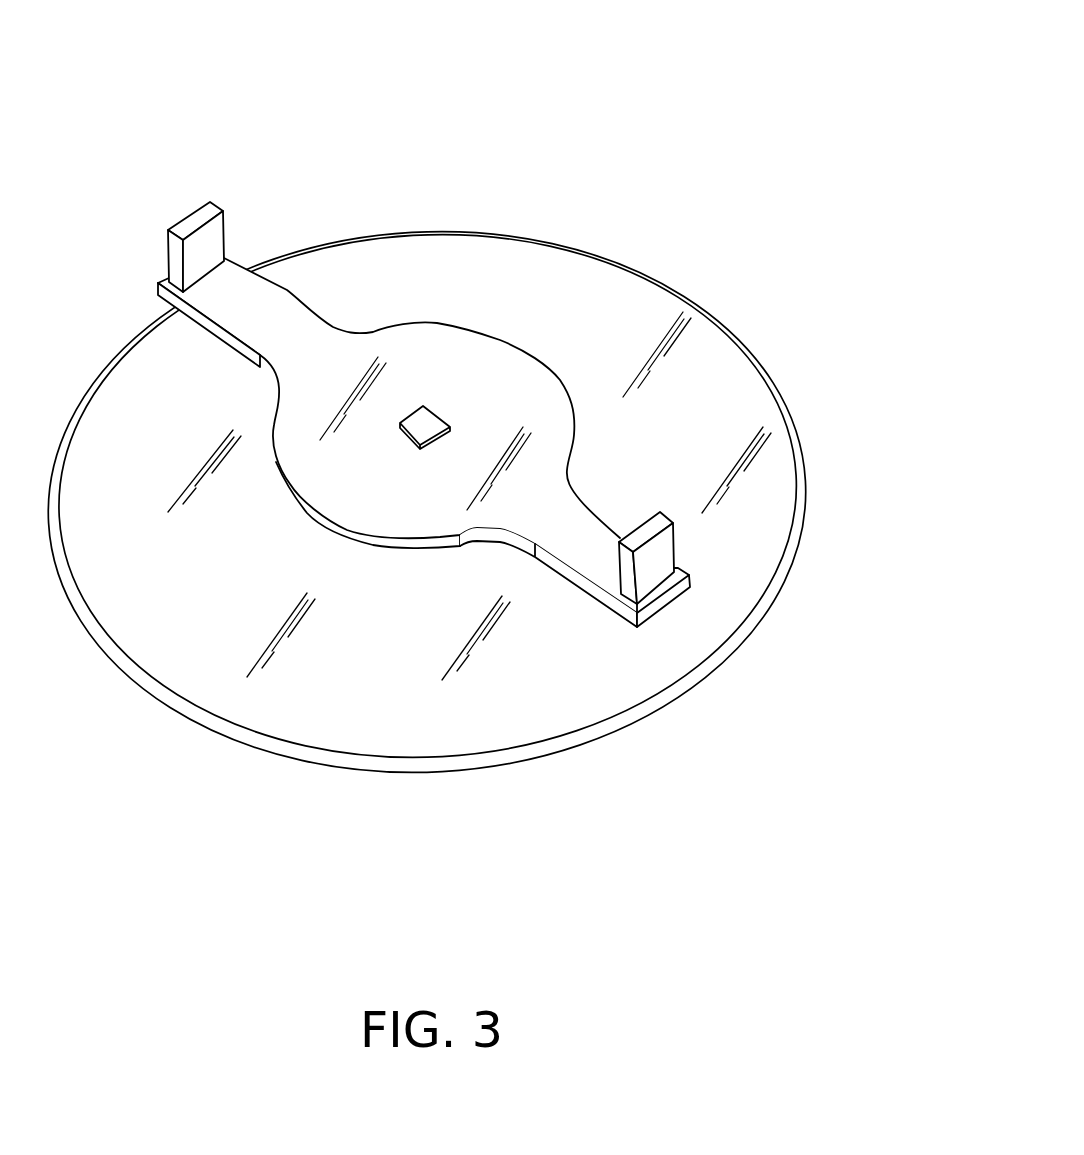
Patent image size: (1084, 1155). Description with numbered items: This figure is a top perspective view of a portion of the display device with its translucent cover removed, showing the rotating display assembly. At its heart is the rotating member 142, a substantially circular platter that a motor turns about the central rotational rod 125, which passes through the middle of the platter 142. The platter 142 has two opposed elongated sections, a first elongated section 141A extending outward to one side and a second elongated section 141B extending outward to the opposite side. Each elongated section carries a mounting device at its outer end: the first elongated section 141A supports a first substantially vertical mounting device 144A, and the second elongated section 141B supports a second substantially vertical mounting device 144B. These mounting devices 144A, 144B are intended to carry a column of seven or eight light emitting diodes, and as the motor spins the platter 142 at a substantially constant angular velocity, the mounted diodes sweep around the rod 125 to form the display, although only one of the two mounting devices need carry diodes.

The rotational rod 125 is at (433, 406).
The rotating member 142 is at (547, 363).
The first elongated section 141A is at (290, 288).
The second elongated section 141B is at (592, 518).
The first mounting device 144A is at (239, 219).
The second mounting device 144B is at (662, 557).